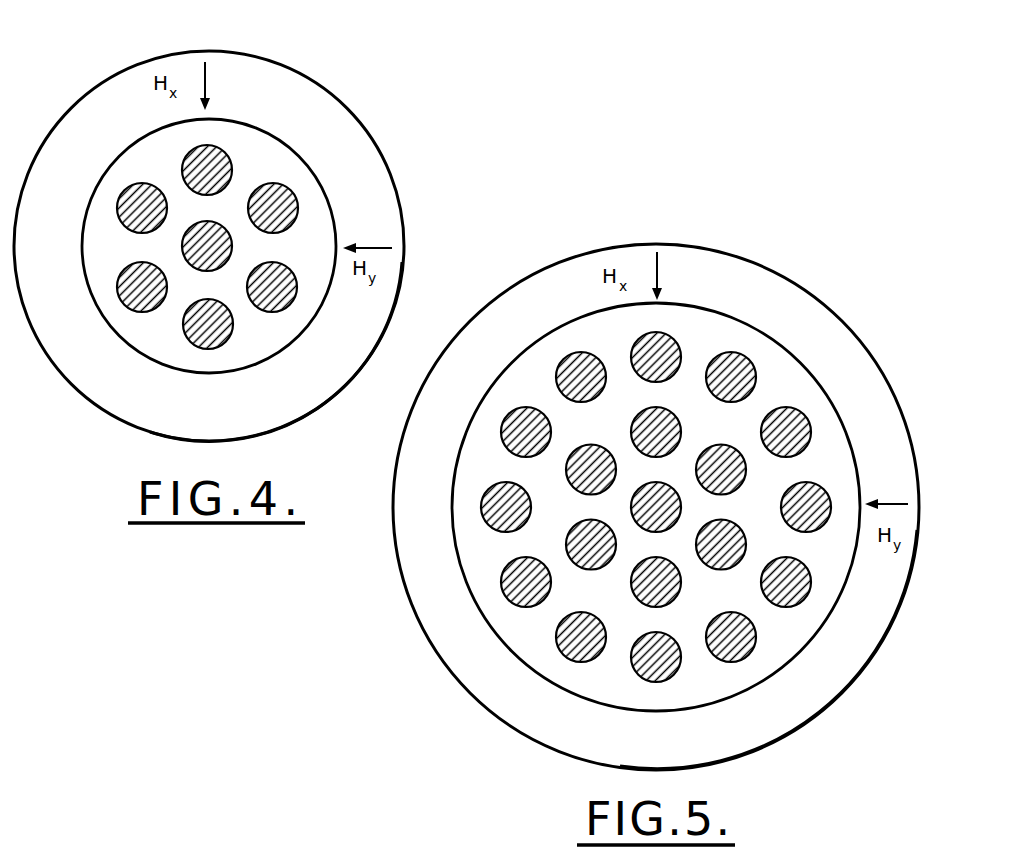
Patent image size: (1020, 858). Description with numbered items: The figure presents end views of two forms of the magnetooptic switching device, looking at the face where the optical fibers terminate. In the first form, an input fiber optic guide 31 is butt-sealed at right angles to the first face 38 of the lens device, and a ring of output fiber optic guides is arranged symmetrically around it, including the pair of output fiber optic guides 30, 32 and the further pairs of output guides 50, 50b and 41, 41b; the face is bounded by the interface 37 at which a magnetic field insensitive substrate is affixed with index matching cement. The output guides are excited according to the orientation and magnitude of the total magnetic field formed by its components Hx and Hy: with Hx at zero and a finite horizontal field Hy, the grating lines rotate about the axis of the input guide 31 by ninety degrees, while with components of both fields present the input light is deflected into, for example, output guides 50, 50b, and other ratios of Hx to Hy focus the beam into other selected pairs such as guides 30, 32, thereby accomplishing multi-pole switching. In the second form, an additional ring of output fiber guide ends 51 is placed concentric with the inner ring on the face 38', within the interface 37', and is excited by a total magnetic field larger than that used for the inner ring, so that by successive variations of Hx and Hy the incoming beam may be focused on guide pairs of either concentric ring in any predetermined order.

In FIG. 4, the output fiber optic guide 30 is at (231, 163).
In FIG. 5, the output fiber optic guide 30 is at (682, 431).
In FIG. 4, the input fiber optic guide 31 is at (231, 239).
In FIG. 5, the input fiber optic guide 31 is at (656, 483).
In FIG. 4, the output fiber optic guide 32 is at (231, 318).
In FIG. 5, the output fiber optic guide 32 is at (681, 578).
In FIG. 4, the interface 37 is at (209, 246).
In FIG. 4, the first face 38 is at (233, 246).
In FIG. 4, the output fiber optic guide 41 is at (120, 293).
In FIG. 4, the output fiber optic guide 41b is at (296, 197).
In FIG. 4, the output fiber optic guide 50 is at (118, 207).
In FIG. 5, the output fiber optic guide 50 is at (570, 457).
In FIG. 4, the output fiber optic guide 50b is at (296, 287).
In FIG. 5, the outer ring output fiber guide end 51 is at (483, 511).
In FIG. 5, the interface 37' is at (635, 507).
In FIG. 5, the face 38' is at (656, 507).